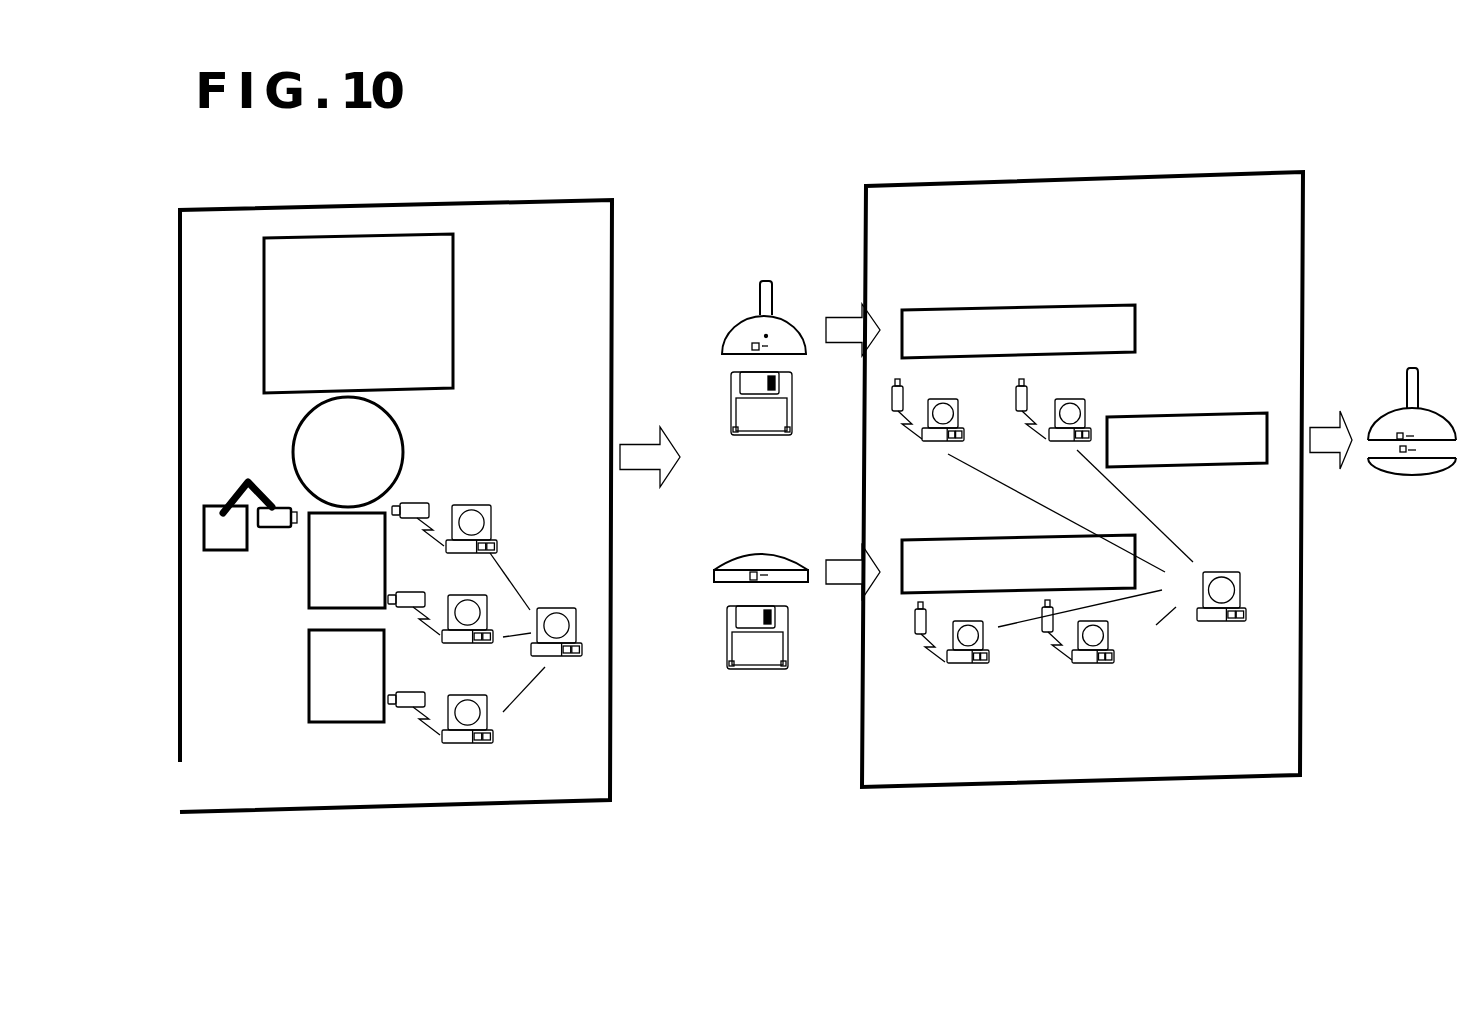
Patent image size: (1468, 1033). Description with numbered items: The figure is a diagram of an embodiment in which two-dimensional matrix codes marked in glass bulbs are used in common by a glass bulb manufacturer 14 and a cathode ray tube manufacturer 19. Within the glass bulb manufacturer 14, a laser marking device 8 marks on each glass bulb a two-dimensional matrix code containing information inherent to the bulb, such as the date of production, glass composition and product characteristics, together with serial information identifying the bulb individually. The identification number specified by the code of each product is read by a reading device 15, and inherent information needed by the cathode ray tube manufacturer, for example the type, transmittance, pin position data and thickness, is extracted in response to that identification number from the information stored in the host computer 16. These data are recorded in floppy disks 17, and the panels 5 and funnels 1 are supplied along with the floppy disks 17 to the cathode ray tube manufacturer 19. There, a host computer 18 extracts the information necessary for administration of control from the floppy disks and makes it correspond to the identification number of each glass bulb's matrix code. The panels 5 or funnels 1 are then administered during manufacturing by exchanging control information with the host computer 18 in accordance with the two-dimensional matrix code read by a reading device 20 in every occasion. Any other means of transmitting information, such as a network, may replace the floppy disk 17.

The funnel 1 is at (745, 333).
The panel 5 is at (716, 580).
The laser marking device 8 is at (226, 532).
The glass bulb manufacturer 14 is at (457, 203).
The reading device 15 is at (463, 745).
The host computer 16 is at (553, 660).
The floppy disk 17 is at (745, 435).
The host computer 18 is at (1208, 632).
The cathode ray tube manufacturer 19 is at (1155, 175).
The reading device 20 is at (925, 443).